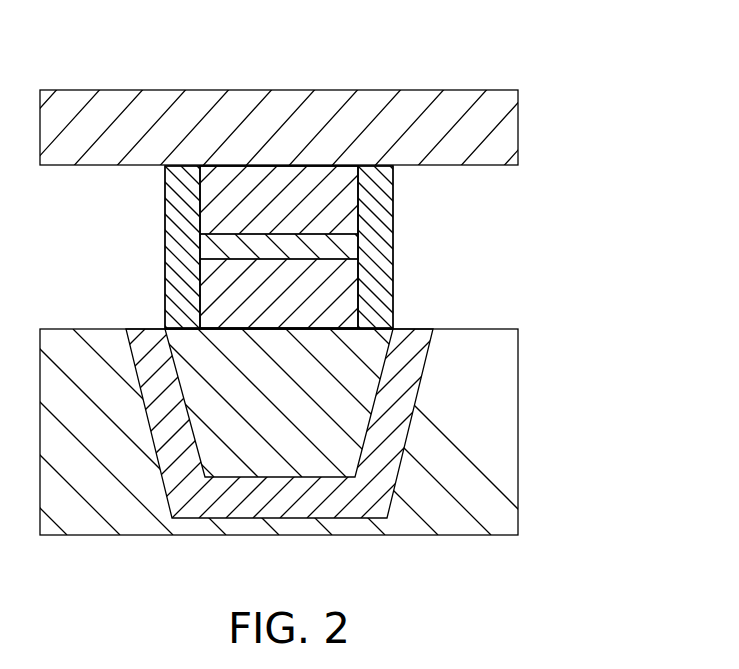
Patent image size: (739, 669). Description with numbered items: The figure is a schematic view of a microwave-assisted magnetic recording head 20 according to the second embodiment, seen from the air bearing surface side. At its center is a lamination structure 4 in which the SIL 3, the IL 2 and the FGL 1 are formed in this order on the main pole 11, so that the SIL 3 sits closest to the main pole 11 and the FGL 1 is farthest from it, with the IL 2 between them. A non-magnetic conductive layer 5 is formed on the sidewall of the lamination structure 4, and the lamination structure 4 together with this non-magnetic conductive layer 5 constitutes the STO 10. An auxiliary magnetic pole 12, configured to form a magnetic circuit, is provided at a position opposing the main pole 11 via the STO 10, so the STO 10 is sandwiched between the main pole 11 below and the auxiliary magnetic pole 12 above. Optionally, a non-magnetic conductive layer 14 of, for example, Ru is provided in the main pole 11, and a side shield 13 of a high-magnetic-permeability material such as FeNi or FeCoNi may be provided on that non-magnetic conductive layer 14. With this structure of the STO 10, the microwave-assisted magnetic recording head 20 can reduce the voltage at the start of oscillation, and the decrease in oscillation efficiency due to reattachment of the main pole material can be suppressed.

The FGL 1 is at (345, 189).
The IL 2 is at (345, 245).
The SIL 3 is at (345, 290).
The lamination structure 4 is at (458, 175).
The non-magnetic conductive layer 5 is at (380, 309).
The STO 10 is at (505, 222).
The main pole 11 is at (345, 375).
The auxiliary magnetic pole 12 is at (508, 130).
The side shield 13 is at (508, 478).
The non-magnetic conductive layer 14 is at (382, 428).
The microwave-assisted magnetic recording head 20 is at (575, 88).